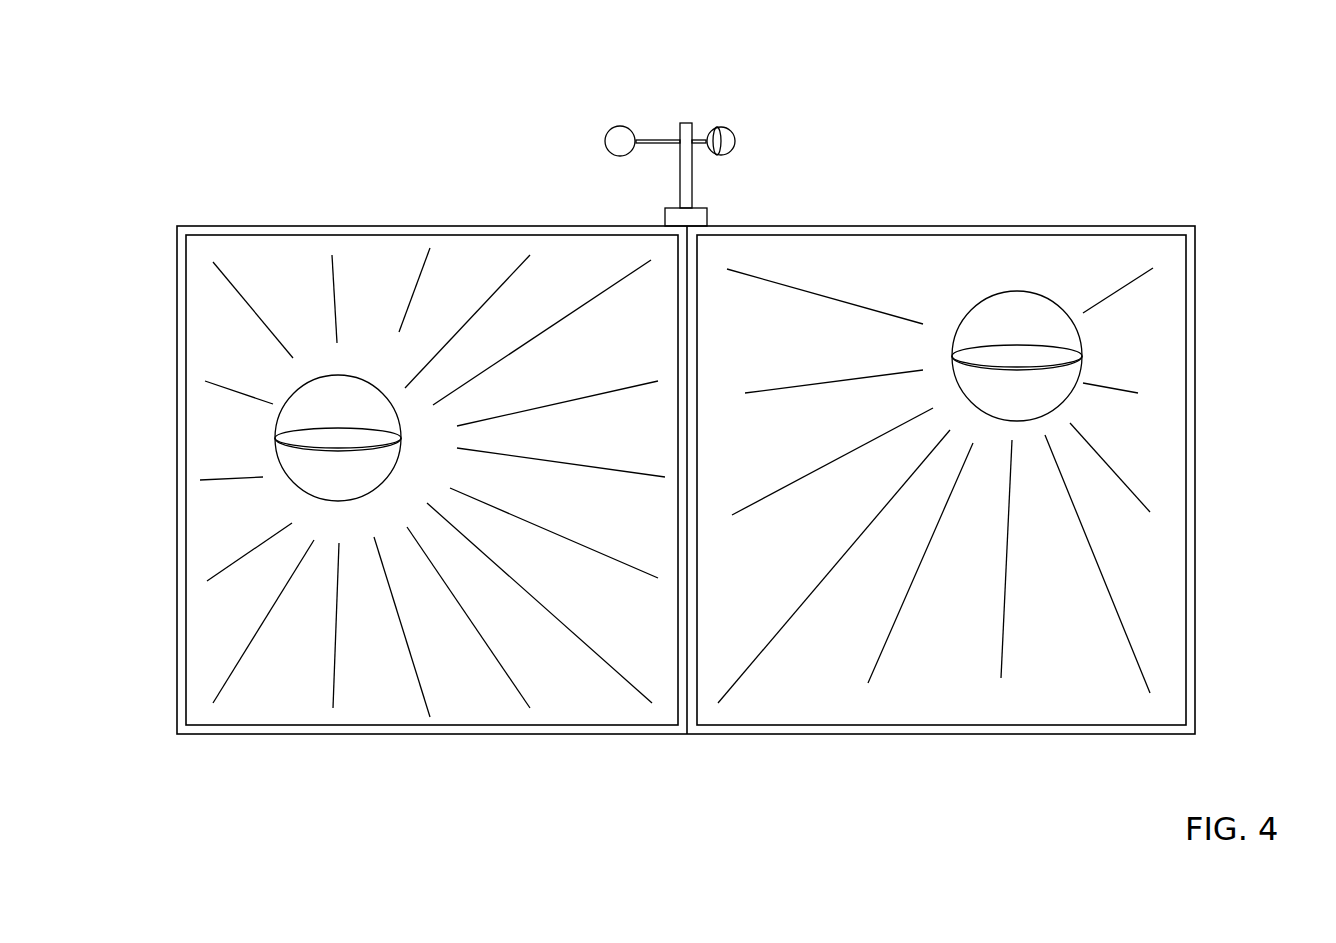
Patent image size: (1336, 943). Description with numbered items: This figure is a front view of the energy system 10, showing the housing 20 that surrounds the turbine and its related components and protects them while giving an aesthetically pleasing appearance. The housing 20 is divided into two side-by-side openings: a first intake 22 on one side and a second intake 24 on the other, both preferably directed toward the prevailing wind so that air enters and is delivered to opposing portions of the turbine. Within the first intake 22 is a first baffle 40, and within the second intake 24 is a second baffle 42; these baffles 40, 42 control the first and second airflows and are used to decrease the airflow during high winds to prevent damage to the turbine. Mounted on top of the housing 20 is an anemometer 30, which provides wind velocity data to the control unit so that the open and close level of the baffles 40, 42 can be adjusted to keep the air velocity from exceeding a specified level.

The energy system 10 is at (237, 108).
The housing 20 is at (315, 227).
The first intake 22 is at (937, 700).
The second intake 24 is at (378, 702).
The anemometer 30 is at (735, 130).
The first baffle 40 is at (1035, 353).
The second baffle 42 is at (312, 442).